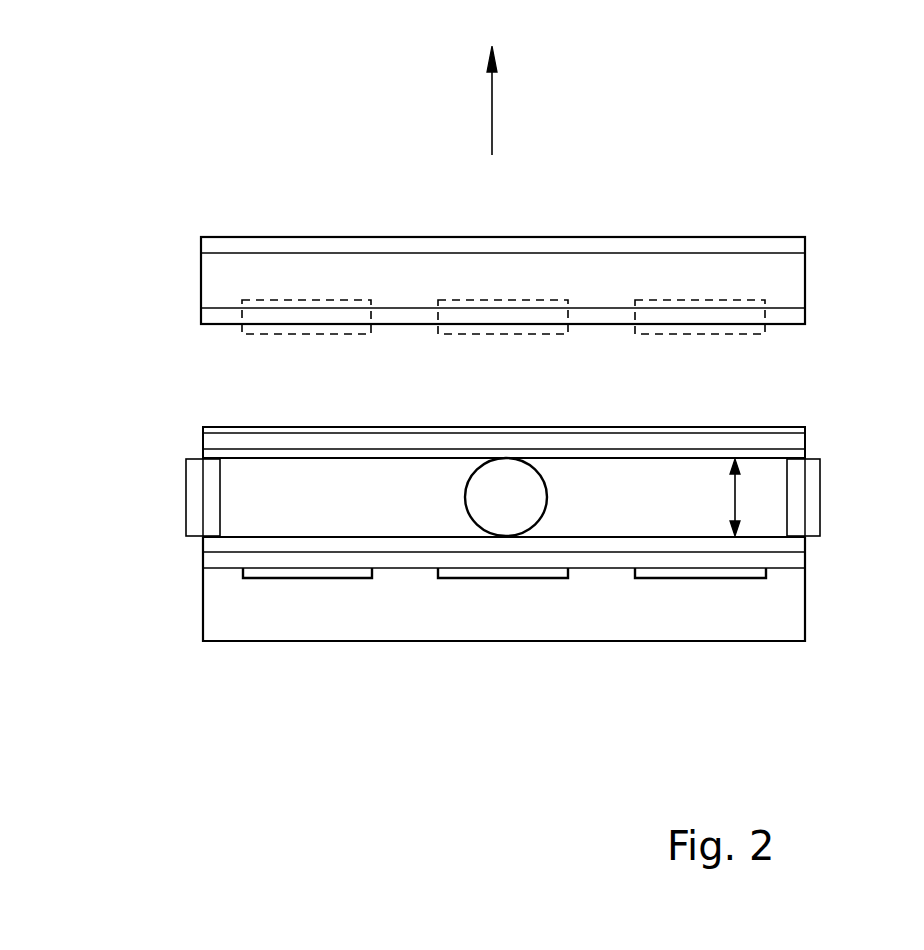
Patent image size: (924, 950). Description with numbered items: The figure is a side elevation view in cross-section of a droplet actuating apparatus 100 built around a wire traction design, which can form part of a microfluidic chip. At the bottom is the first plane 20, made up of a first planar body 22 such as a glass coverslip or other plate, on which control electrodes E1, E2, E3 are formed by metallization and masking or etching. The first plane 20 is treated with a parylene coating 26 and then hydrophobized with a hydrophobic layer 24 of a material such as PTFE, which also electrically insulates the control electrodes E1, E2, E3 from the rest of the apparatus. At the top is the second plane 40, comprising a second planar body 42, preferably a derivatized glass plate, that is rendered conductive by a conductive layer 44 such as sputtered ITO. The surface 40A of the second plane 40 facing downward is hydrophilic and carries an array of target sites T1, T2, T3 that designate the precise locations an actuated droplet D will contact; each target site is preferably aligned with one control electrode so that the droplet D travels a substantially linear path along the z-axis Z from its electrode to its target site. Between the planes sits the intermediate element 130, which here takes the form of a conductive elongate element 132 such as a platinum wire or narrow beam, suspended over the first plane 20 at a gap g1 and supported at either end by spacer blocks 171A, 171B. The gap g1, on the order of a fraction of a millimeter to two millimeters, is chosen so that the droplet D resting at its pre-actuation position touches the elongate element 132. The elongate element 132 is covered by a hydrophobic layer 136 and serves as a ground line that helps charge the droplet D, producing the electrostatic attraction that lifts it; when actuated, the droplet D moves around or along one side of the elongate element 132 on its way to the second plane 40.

The droplet actuating apparatus 100 is at (852, 118).
The second plane 40 is at (499, 288).
The conductive layer 44 is at (805, 243).
The second planar body 42 is at (805, 276).
The surface 40A is at (602, 326).
The target site T1 is at (263, 300).
The target site T2 is at (512, 300).
The target site T3 is at (668, 300).
The intermediate element 130 is at (469, 411).
The hydrophobic layer 136 is at (806, 428).
The conductive elongate element 132 is at (806, 445).
The spacer block 171A is at (185, 483).
The spacer block 171B is at (820, 507).
The droplet D is at (465, 497).
The gap g1 is at (737, 497).
The first plane 20 is at (502, 589).
The hydrophobic layer 24 is at (806, 545).
The parylene coating 26 is at (806, 560).
The first planar body 22 is at (806, 597).
The control electrode E1 is at (273, 578).
The control electrode E2 is at (462, 578).
The control electrode E3 is at (658, 578).
The z-axis Z is at (492, 100).